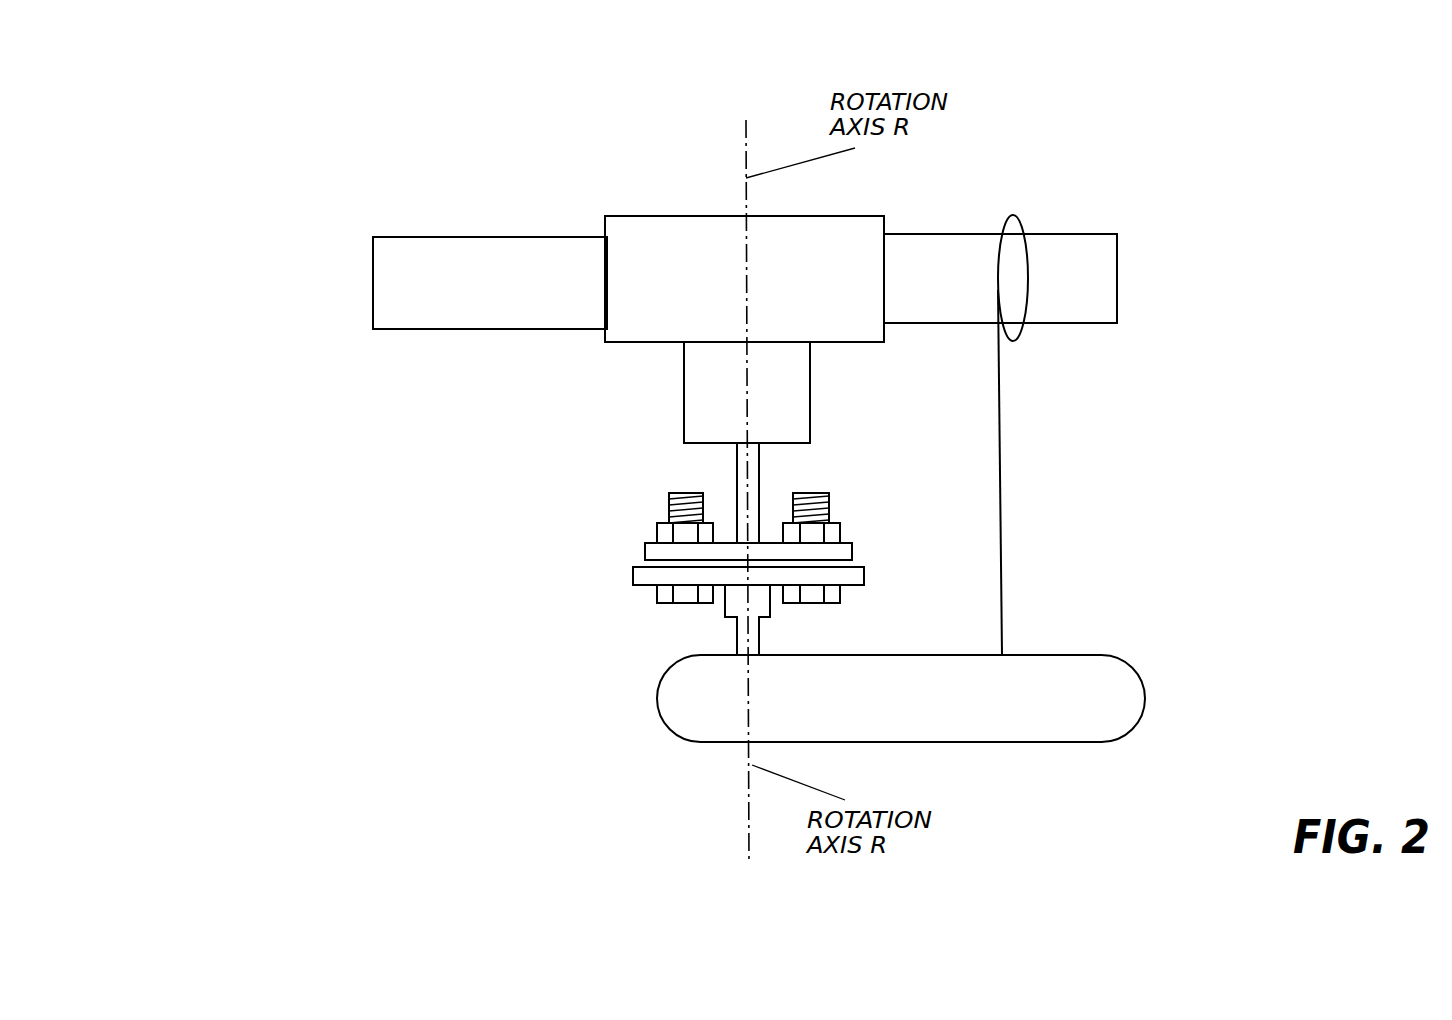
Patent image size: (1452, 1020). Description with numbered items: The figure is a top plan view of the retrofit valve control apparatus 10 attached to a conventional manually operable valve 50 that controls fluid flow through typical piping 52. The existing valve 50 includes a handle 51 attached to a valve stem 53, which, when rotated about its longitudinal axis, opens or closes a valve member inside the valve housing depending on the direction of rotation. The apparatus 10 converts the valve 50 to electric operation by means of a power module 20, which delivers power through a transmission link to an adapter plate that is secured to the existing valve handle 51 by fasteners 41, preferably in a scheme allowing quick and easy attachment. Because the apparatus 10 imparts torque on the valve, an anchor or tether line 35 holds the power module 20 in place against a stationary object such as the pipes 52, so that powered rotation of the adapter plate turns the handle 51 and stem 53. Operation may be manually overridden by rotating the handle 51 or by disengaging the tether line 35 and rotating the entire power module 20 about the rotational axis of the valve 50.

The retrofit valve control apparatus 10 is at (440, 570).
The power module 20 is at (1077, 684).
The tether line 35 is at (1000, 502).
The fasteners 41 is at (823, 538).
The manually operable valve 50 is at (668, 248).
The valve handle 51 is at (645, 545).
The piping 52 is at (394, 291).
The valve stem 53 is at (735, 472).